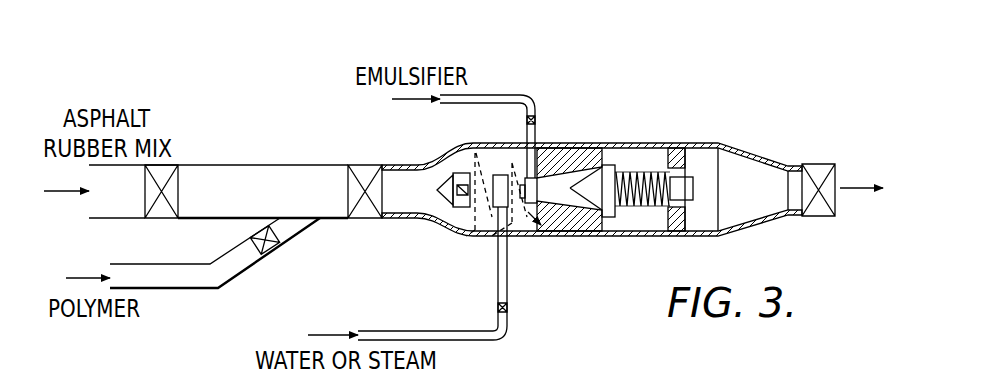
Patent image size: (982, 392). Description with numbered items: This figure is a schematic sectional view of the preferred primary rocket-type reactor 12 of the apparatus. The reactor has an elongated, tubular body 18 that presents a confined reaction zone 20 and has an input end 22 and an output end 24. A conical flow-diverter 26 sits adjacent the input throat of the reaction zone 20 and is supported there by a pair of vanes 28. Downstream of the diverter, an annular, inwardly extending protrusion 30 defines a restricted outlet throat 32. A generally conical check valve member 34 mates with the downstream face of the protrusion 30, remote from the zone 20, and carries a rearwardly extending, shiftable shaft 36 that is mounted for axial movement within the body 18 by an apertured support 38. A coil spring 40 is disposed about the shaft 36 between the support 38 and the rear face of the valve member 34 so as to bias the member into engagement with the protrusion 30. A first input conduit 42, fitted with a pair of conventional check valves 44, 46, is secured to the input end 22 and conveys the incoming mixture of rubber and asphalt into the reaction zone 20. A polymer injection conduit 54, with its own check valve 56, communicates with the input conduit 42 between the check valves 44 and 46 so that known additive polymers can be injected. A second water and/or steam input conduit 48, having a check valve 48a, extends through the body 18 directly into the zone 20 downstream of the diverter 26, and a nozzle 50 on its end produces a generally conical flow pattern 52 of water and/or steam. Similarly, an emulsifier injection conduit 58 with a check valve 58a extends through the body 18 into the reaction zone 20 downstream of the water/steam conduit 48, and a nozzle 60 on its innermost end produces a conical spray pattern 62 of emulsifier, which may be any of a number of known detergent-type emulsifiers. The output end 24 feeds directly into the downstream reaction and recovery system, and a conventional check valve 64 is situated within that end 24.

The primary reactor 12 is at (697, 100).
The tubular body 18 is at (613, 143).
The reaction zone 20 is at (558, 238).
The input end 22 is at (393, 197).
The output end 24 is at (797, 205).
The conical flow-diverter 26 is at (437, 185).
The vanes 28 is at (416, 220).
The annular protrusion 30 is at (592, 228).
The restricted outlet throat 32 is at (565, 152).
The check valve member 34 is at (654, 148).
The shaft 36 is at (706, 178).
The apertured support 38 is at (733, 228).
The coil spring 40 is at (674, 210).
The first input conduit 42 is at (235, 163).
The check valve 44 is at (162, 220).
The check valve 46 is at (361, 163).
The water and/or steam input conduit 48 is at (477, 341).
The check valve 48a is at (497, 308).
The nozzle 50 is at (496, 216).
The conical flow pattern 52 is at (452, 233).
The polymer injection conduit 54 is at (172, 290).
The check valve 56 is at (271, 251).
The emulsifier injection conduit 58 is at (487, 95).
The check valve 58a is at (527, 120).
The nozzle 60 is at (540, 143).
The conical spray pattern 62 is at (517, 235).
The check valve 64 is at (815, 164).